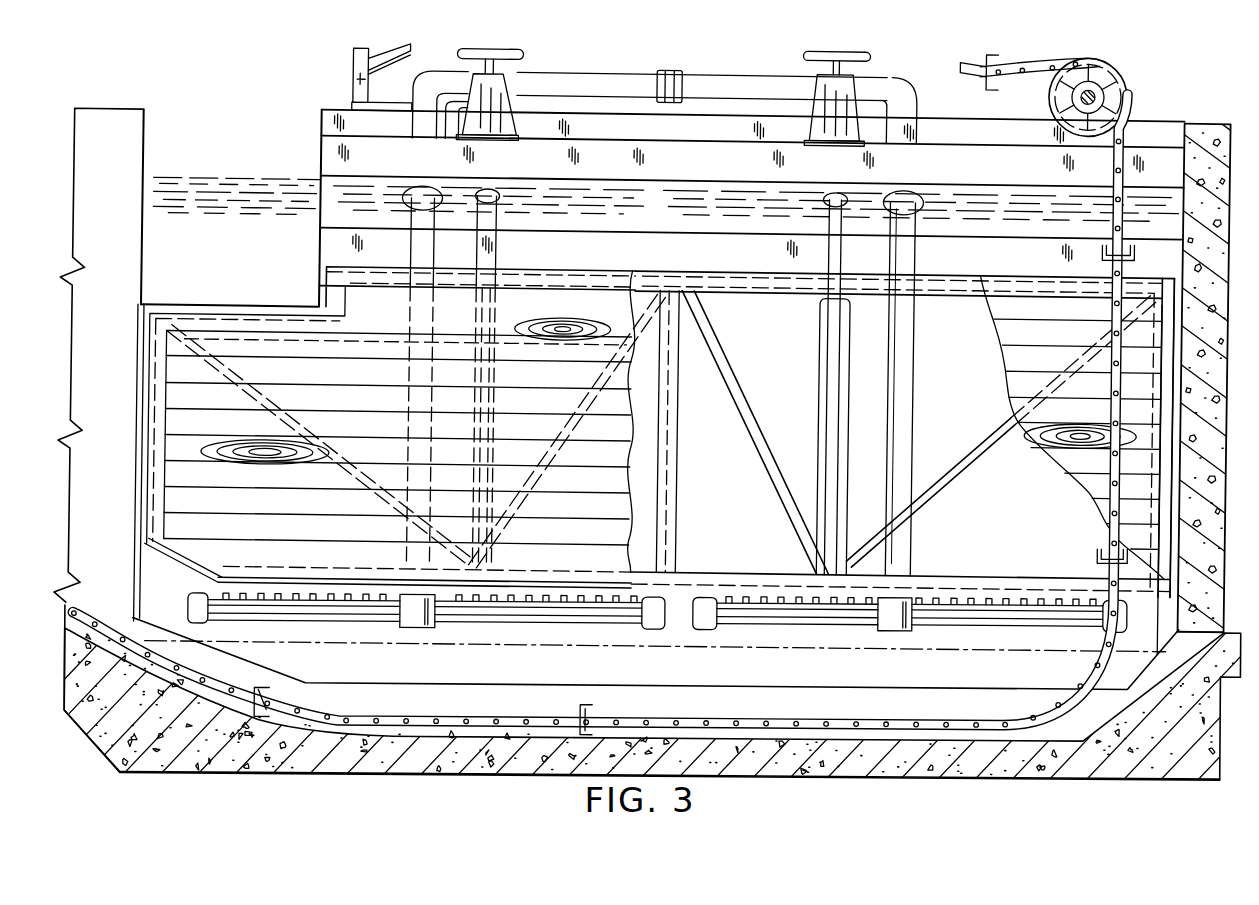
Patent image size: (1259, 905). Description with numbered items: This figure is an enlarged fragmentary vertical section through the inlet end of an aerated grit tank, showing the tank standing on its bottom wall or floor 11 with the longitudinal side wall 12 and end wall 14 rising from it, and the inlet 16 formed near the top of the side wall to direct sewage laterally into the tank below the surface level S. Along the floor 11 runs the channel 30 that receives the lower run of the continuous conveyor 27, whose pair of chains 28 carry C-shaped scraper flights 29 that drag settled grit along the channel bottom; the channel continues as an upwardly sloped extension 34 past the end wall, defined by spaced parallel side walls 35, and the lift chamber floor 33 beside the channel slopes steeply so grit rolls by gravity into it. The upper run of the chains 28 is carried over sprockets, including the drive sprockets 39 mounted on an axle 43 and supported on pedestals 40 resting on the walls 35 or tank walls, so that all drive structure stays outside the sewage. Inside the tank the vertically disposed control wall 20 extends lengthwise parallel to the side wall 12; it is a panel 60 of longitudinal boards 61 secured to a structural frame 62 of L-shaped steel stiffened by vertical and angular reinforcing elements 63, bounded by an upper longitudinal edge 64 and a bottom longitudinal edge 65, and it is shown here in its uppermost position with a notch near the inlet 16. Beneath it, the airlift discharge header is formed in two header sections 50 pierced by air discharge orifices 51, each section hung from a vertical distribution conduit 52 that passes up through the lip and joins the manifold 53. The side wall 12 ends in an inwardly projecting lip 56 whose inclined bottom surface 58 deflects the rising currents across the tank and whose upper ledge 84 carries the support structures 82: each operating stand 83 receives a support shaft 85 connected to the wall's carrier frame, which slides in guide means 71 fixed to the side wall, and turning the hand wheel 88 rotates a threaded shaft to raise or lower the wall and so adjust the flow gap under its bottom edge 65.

The bottom wall or floor 11 is at (808, 776).
The side wall 12 is at (315, 122).
The end wall 14 is at (1227, 122).
The inlet 16 is at (250, 112).
The vertically disposed wall 20 is at (312, 282).
The continuous conveyor 27 is at (429, 710).
The chains 28 is at (1124, 120).
The scraper flights 29 is at (263, 696).
The channel 30 is at (716, 738).
The bottom wall surface of lift chamber 33 is at (495, 673).
The longitudinal extension of channel 34 is at (82, 638).
The side walls of channel extension 35 is at (138, 132).
The sprockets 39 is at (1055, 86).
The pedestals 40 is at (355, 67).
The axle 43 is at (1095, 88).
The header sections 50 is at (371, 612).
The air discharge orifices 51 is at (580, 602).
The vertical distribution conduit 52 is at (409, 215).
The manifold 53 is at (618, 75).
The inwardly projecting lip 56 is at (321, 160).
The inclined bottom surface 58 is at (886, 214).
The panel 60 is at (246, 346).
The boards 61 is at (383, 331).
The structural frame 62 is at (765, 288).
The reinforcing elements 63 is at (830, 412).
The upper longitudinally extending edge 64 is at (550, 269).
The bottom longitudinally extending edge 65 is at (530, 620).
The guide means 71 is at (847, 352).
The support structures 82 is at (512, 84).
The operating stand 83 is at (492, 101).
The upper ledge 84 is at (356, 134).
The support shaft 85 is at (487, 249).
The operating hand wheel 88 is at (518, 55).
The surface of the sewage S is at (201, 184).